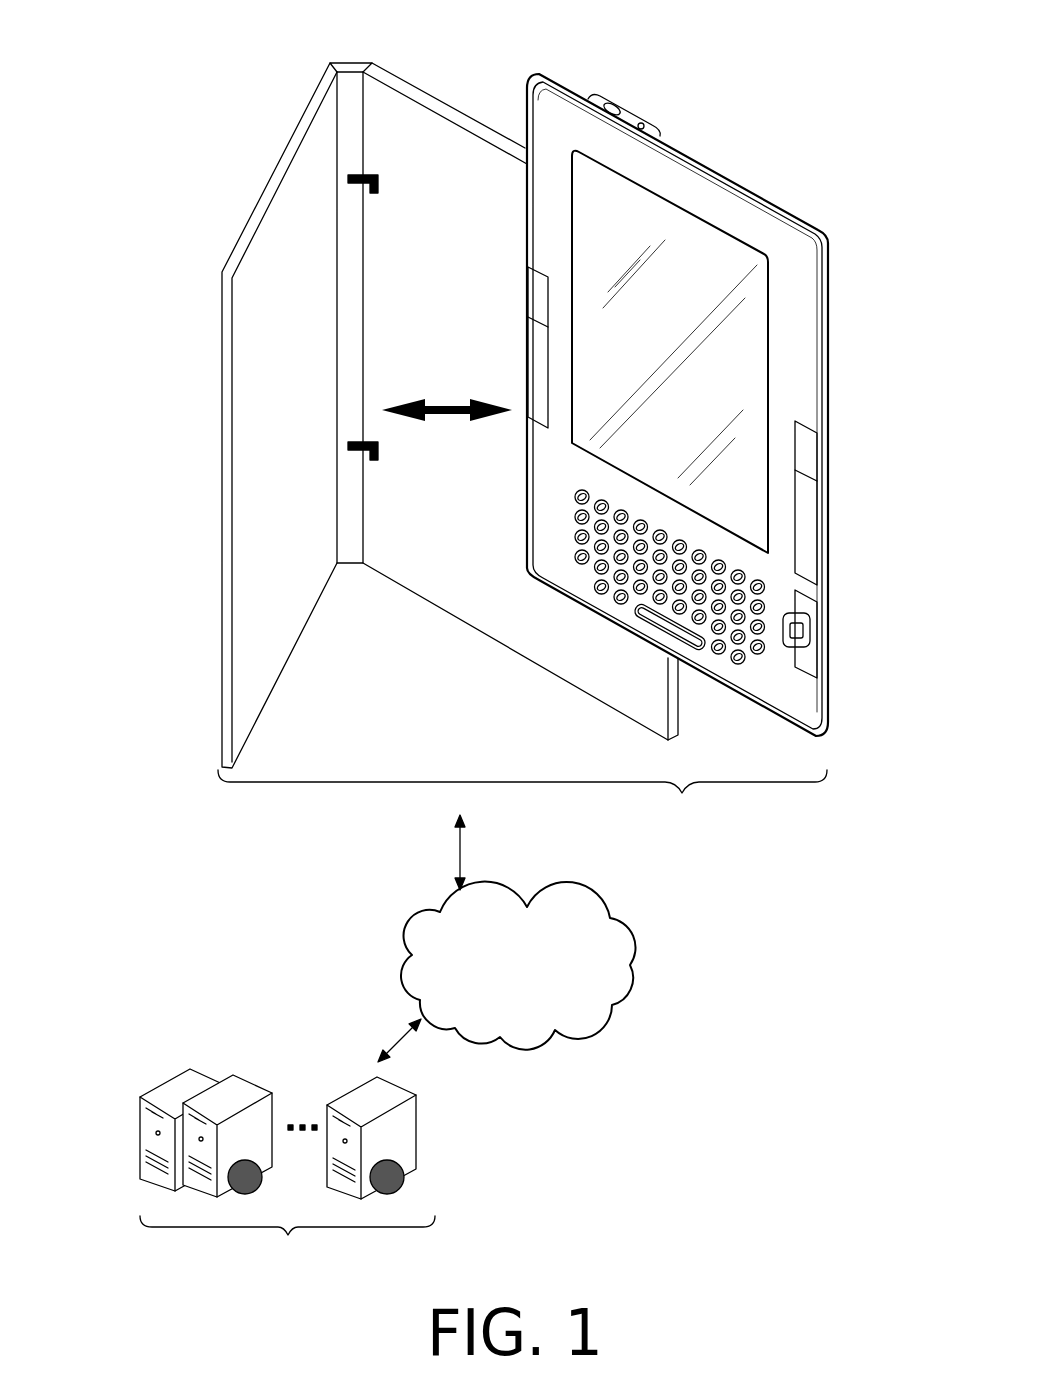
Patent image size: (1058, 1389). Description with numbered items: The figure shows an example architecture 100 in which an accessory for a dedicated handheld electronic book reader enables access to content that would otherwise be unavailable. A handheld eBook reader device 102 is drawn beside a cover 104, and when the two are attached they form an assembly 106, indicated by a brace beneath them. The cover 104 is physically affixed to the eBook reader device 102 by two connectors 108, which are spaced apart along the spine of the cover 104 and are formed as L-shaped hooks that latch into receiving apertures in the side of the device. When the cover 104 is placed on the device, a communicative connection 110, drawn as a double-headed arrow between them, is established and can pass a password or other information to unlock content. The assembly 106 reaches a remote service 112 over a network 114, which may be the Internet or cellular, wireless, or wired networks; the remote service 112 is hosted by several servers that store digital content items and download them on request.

The architecture 100 is at (862, 30).
The eBook reader device 102 is at (804, 166).
The cover 104 is at (250, 172).
The assembly 106 is at (523, 461).
The connectors 108 is at (340, 208).
The communicative connection 110 is at (466, 420).
The remote service 112 is at (296, 1140).
The network 114 is at (537, 988).